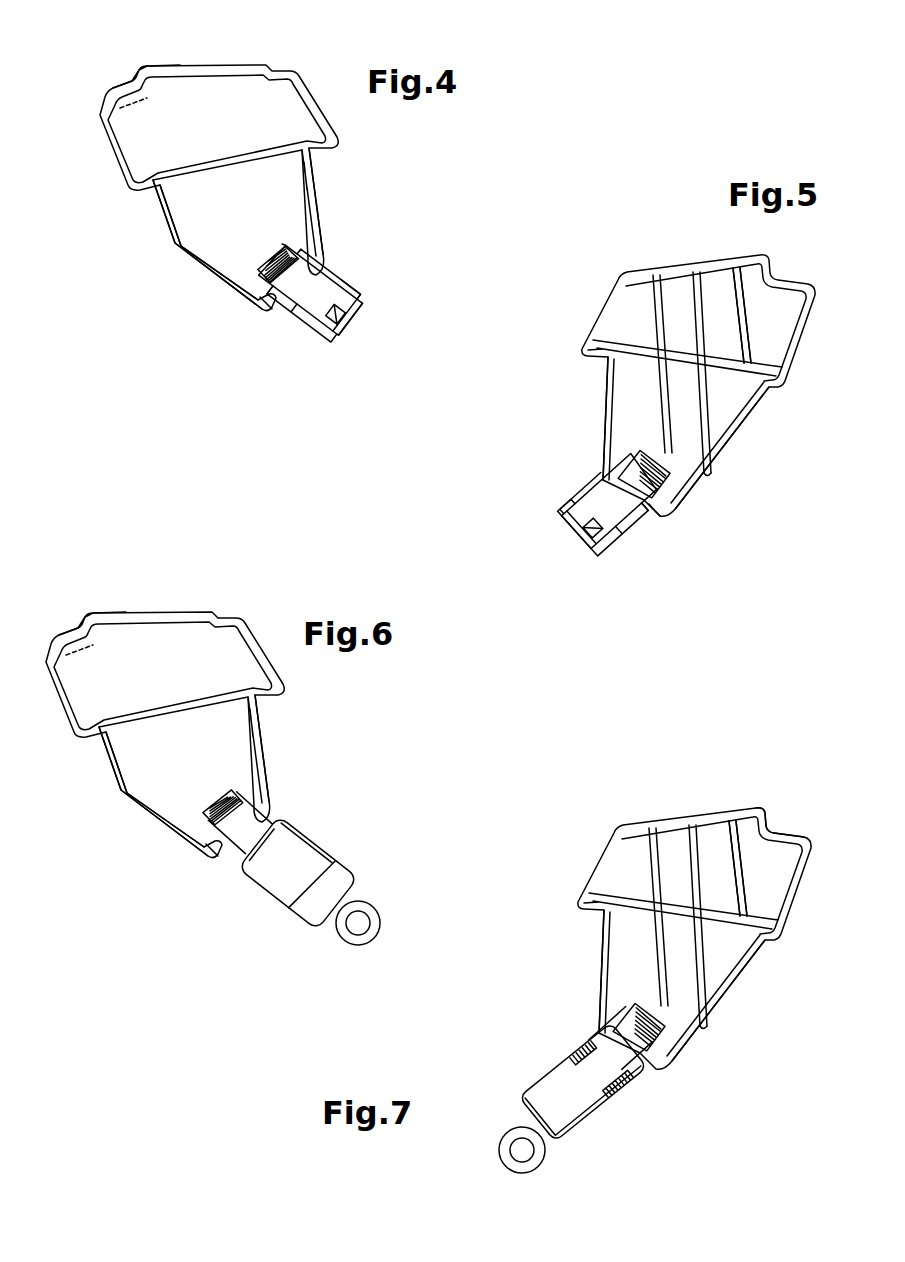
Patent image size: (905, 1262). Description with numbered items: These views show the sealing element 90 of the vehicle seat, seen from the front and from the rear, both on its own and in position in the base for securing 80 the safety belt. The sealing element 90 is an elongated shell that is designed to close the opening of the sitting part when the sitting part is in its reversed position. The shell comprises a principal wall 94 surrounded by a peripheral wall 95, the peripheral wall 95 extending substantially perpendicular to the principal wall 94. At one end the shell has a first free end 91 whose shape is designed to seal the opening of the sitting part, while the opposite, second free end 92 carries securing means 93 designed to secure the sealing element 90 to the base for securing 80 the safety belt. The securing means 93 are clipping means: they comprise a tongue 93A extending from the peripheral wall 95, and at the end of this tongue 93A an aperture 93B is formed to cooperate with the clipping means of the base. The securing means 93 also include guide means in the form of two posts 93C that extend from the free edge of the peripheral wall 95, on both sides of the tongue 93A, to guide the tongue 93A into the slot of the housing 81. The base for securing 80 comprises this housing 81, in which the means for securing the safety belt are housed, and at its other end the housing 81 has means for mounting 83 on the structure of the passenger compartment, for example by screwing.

In FIG. 6, the base for securing the safety belt 80 is at (277, 887).
In FIG. 7, the base for securing the safety belt 80 is at (580, 1120).
In FIG. 6, the housing 81 is at (302, 852).
In FIG. 7, the housing 81 is at (537, 1097).
In FIG. 6, the means for mounting 83 is at (362, 937).
In FIG. 7, the means for mounting 83 is at (502, 1137).
In FIG. 4, the sealing element 90 is at (223, 237).
In FIG. 5, the sealing element 90 is at (747, 455).
In FIG. 6, the sealing element 90 is at (233, 763).
In FIG. 7, the sealing element 90 is at (625, 947).
In FIG. 4, the first free end 91 is at (257, 90).
In FIG. 5, the first free end 91 is at (675, 263).
In FIG. 6, the first free end 91 is at (200, 633).
In FIG. 7, the first free end 91 is at (673, 837).
In FIG. 4, the second free end 92 is at (310, 293).
In FIG. 5, the second free end 92 is at (605, 498).
In FIG. 6, the second free end 92 is at (237, 821).
In FIG. 7, the second free end 92 is at (649, 1087).
In FIG. 4, the securing means 93 is at (357, 322).
In FIG. 5, the securing means 93 is at (600, 547).
In FIG. 4, the tongue 93A is at (297, 333).
In FIG. 5, the tongue 93A is at (638, 517).
In FIG. 4, the aperture 93B is at (337, 333).
In FIG. 5, the aperture 93B is at (578, 523).
In FIG. 4, the posts 93C is at (347, 290).
In FIG. 5, the posts 93C is at (565, 508).
In FIG. 7, the posts 93C is at (577, 1033).
In FIG. 4, the principal wall 94 is at (283, 190).
In FIG. 5, the principal wall 94 is at (738, 408).
In FIG. 6, the principal wall 94 is at (223, 728).
In FIG. 7, the principal wall 94 is at (732, 962).
In FIG. 4, the peripheral wall 95 is at (181, 72).
In FIG. 5, the peripheral wall 95 is at (615, 399).
In FIG. 6, the peripheral wall 95 is at (73, 632).
In FIG. 7, the peripheral wall 95 is at (777, 828).